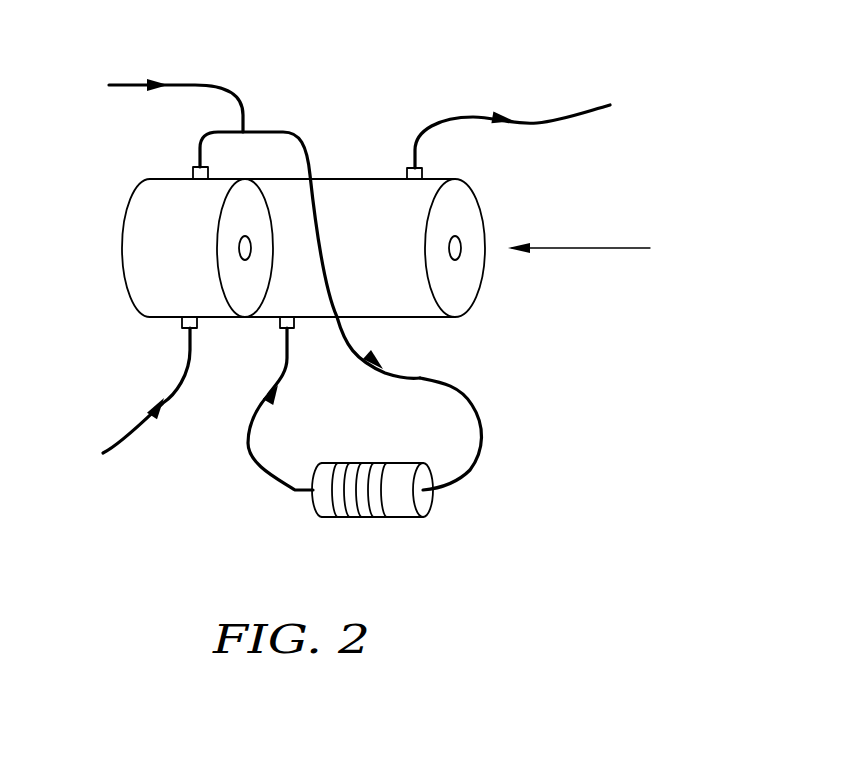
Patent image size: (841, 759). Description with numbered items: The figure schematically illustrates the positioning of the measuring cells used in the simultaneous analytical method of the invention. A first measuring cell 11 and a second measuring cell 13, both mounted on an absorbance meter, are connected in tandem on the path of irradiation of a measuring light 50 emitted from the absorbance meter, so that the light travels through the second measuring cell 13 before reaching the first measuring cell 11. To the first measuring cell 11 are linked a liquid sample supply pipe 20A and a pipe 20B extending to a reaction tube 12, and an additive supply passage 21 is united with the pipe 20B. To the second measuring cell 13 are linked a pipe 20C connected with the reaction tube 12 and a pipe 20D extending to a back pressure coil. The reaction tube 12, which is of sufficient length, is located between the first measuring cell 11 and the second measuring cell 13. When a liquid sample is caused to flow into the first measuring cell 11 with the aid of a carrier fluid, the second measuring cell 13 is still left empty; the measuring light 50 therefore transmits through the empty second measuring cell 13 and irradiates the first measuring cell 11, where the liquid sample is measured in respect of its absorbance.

The first measuring cell 11 is at (140, 233).
The reaction tube 12 is at (400, 518).
The second measuring cell 13 is at (340, 178).
The additive supply passage 21 is at (206, 82).
The liquid sample supply pipe 20A is at (142, 420).
The pipe extending to reaction tube 20B is at (482, 443).
The pipe connected with reaction tube 20C is at (247, 462).
The pipe extending to back pressure coil 20D is at (573, 113).
The measuring light 50 is at (592, 250).